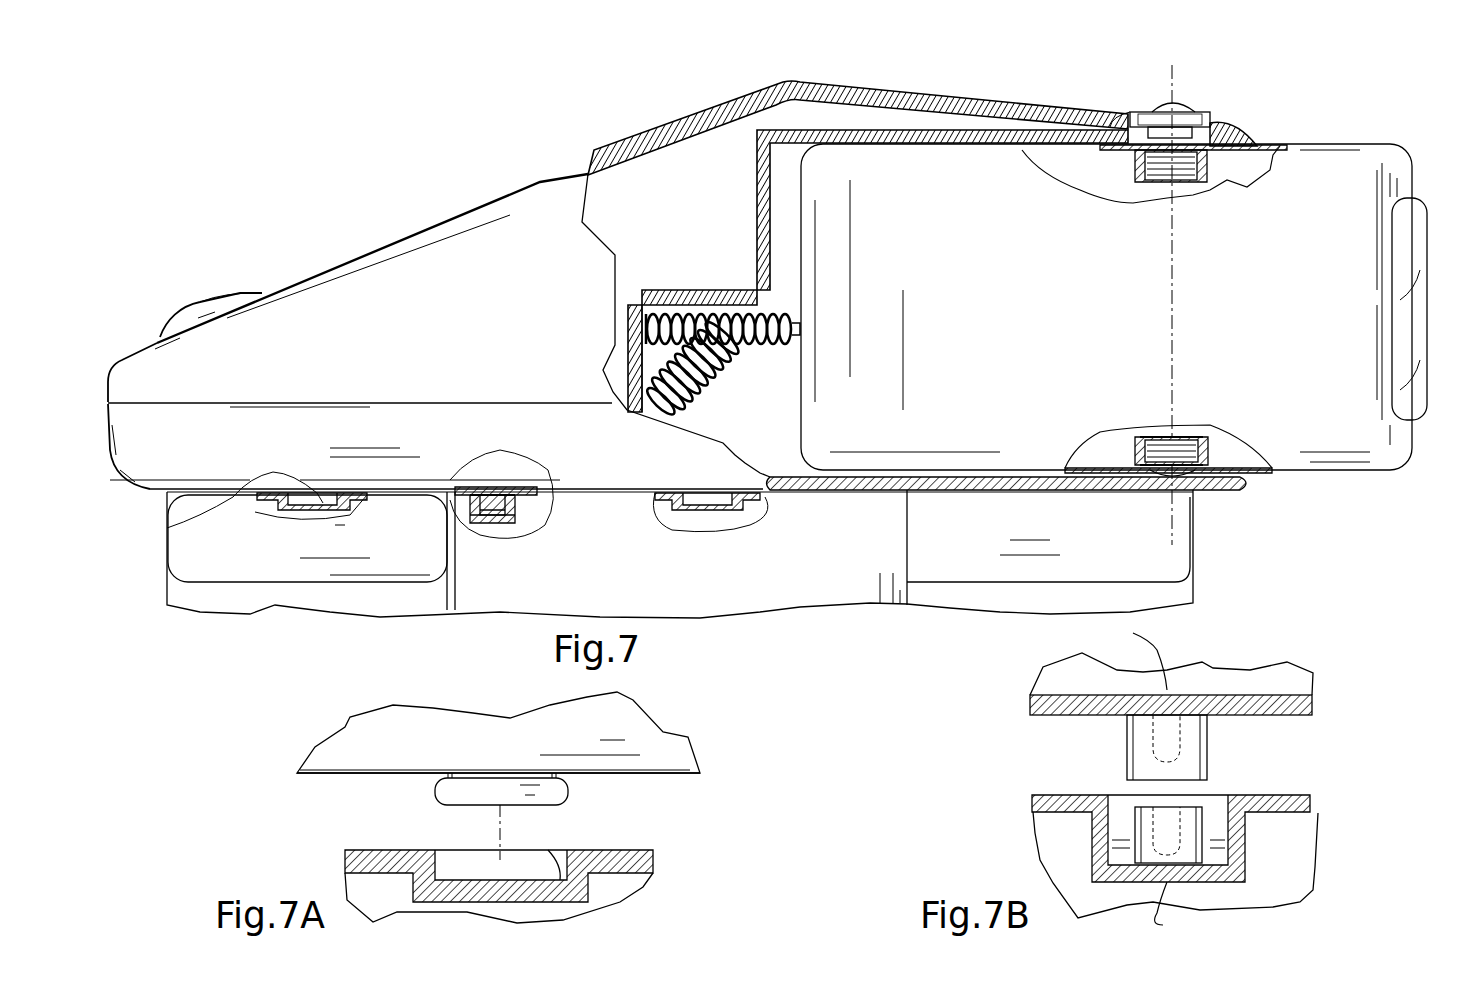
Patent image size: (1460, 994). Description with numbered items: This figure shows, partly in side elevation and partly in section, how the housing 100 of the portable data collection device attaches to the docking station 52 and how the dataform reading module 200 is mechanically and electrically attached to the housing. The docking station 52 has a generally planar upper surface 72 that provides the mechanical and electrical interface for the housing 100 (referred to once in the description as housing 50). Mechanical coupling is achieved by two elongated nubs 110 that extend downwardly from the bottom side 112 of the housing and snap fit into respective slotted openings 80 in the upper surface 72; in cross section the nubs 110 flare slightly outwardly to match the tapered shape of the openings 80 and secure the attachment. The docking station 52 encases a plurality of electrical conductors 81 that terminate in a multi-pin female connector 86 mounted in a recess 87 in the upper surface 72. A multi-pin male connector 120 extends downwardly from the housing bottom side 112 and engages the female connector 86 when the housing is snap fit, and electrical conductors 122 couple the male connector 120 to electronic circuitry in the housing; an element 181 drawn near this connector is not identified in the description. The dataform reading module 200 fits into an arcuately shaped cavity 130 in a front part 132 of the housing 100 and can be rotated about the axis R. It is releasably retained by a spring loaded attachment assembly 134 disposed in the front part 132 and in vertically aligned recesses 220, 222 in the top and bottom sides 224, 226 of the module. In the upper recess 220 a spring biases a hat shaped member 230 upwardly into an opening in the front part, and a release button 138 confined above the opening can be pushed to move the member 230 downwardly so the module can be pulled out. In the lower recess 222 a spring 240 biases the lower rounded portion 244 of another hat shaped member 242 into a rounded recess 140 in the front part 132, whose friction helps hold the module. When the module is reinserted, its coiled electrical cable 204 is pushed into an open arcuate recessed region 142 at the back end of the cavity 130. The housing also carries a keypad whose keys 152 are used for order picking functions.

In FIG. 7, the housing 50 is at (800, 628).
In FIG. 7A, the docking station 52 is at (628, 907).
In FIG. 7A, the docking station upper surface 72 is at (397, 848).
In FIG. 7B, the docking station upper surface 72 is at (1070, 797).
In FIG. 7A, the slotted openings 80 is at (548, 848).
In FIG. 7B, the electrical conductors 81 is at (1175, 906).
In FIG. 7B, the multi-pin female connector 86 is at (1140, 827).
In FIG. 7B, the recess 87 is at (1208, 860).
In FIG. 7, the housing 100 is at (448, 198).
In FIG. 7A, the housing 100 is at (672, 728).
In FIG. 7B, the housing 100 is at (1305, 662).
In FIG. 7, the elongated nubs 110 is at (167, 528).
In FIG. 7A, the elongated nubs 110 is at (467, 793).
In FIG. 7A, the bottom side 112 is at (657, 773).
In FIG. 7B, the bottom side 112 is at (1060, 715).
In FIG. 7, the multi-pin male connector 120 is at (505, 505).
In FIG. 7B, the multi-pin male connector 120 is at (1210, 747).
In FIG. 7, the electrical conductors 122 is at (500, 473).
In FIG. 7B, the electrical conductors 122 is at (1162, 672).
In FIG. 7, the cavity 130 is at (770, 232).
In FIG. 7, the front part 132 is at (1085, 82).
In FIG. 7, the spring loaded attachment assembly 134 is at (1202, 102).
In FIG. 7, the release button 138 is at (1165, 120).
In FIG. 7, the rounded recess 140 is at (1187, 492).
In FIG. 7, the arcuate shaped recessed region 142 is at (628, 342).
In FIG. 7, the keys 152 is at (200, 312).
In FIG. 7, the fastener 181 is at (505, 518).
In FIG. 7, the dataform reading module 200 is at (1338, 132).
In FIG. 7, the coiled electrical cable 204 is at (740, 345).
In FIG. 7, the upper recess 220 is at (1133, 162).
In FIG. 7, the lower recess 222 is at (1147, 483).
In FIG. 7, the top side 224 is at (1367, 143).
In FIG. 7, the bottom side 226 is at (1330, 475).
In FIG. 7, the hat shaped member 230 is at (1228, 132).
In FIG. 7, the spring 240 is at (1190, 443).
In FIG. 7, the hat shaped member 242 is at (1168, 450).
In FIG. 7, the lower rounded portion 244 is at (1170, 473).
In FIG. 7, the axis R— R is at (1172, 300).